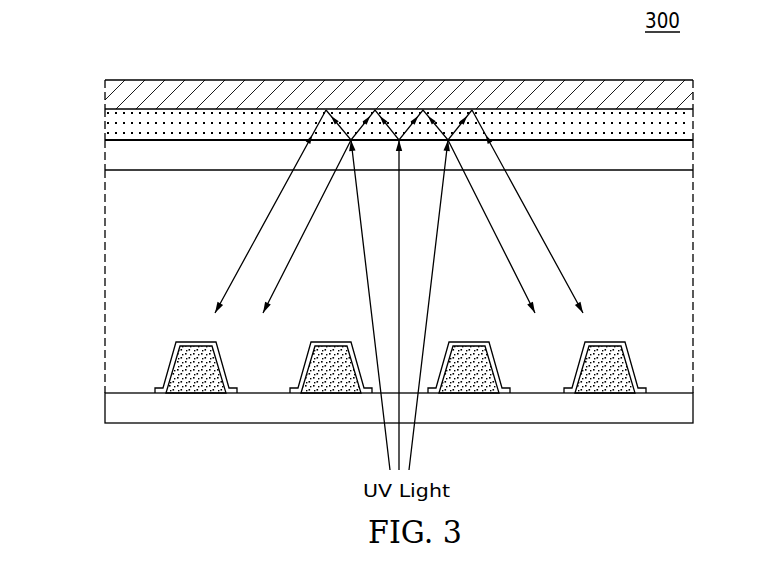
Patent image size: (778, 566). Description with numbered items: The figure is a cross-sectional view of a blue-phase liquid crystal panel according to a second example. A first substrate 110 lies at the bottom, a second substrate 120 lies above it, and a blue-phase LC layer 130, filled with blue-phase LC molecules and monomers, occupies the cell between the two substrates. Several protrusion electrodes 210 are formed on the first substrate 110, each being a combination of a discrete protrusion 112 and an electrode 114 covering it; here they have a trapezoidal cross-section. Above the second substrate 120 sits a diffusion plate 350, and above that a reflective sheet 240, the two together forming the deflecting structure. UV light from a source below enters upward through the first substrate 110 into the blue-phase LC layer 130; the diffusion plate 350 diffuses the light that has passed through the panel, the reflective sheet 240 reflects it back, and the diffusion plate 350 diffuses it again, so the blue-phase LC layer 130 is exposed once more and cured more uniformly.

The reflective sheet 240 is at (684, 95).
The diffusion plate 350 is at (684, 127).
The second substrate 120 is at (684, 160).
The blue-phase LC layer 130 is at (685, 289).
The first substrate 110 is at (685, 414).
The protrusion electrode 210 is at (60, 322).
The electrode 114 is at (176, 343).
The protrusion 112 is at (182, 382).